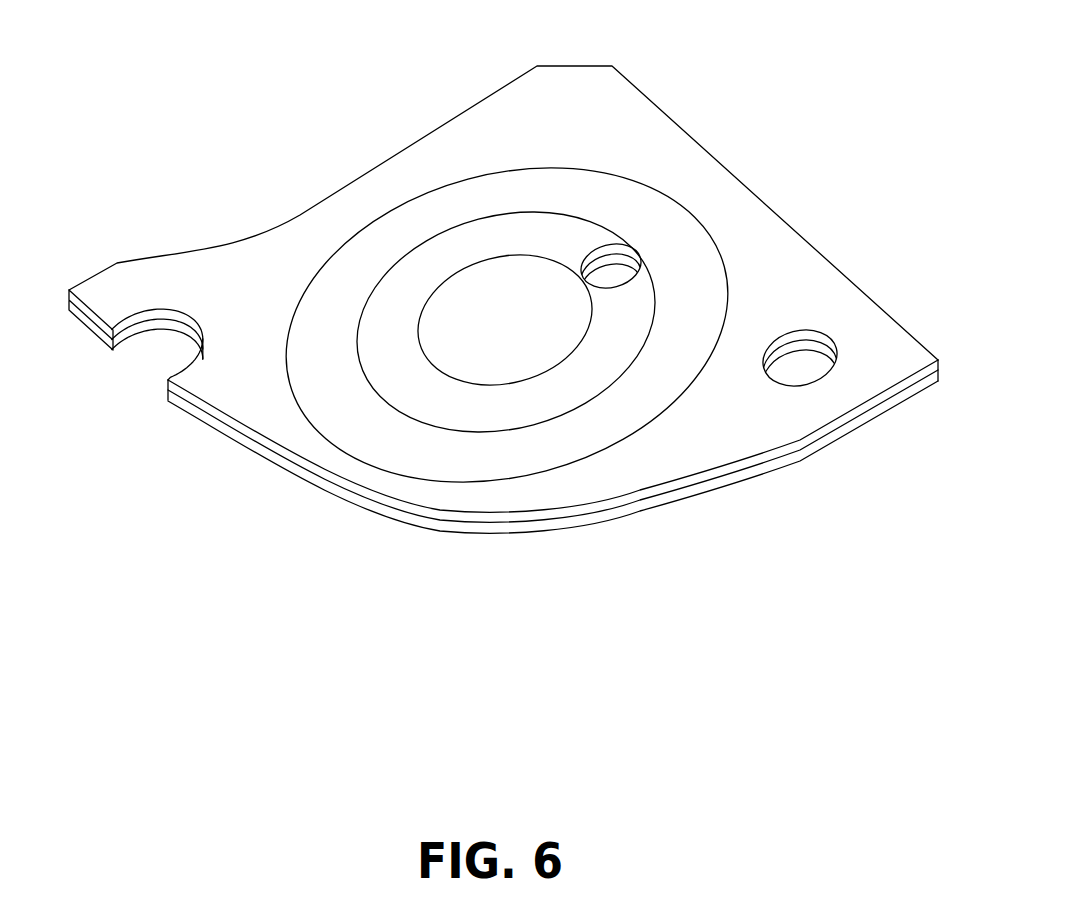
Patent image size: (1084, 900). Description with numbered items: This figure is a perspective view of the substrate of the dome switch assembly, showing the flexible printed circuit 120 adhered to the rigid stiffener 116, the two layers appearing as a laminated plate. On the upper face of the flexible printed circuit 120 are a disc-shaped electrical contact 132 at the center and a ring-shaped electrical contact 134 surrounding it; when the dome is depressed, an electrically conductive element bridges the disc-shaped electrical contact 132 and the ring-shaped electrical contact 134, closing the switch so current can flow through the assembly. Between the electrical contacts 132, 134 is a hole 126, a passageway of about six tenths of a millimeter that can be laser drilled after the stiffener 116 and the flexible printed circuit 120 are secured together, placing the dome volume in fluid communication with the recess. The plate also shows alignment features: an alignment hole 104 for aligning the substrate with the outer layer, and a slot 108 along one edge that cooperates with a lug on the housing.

The alignment hole 104 is at (803, 365).
The slot 108 is at (153, 345).
The stiffener 116 is at (720, 493).
The flexible printed circuit 120 is at (580, 88).
The hole 126 is at (610, 268).
The disc-shaped electrical contact 132 is at (498, 312).
The ring-shaped electrical contact 134 is at (368, 260).